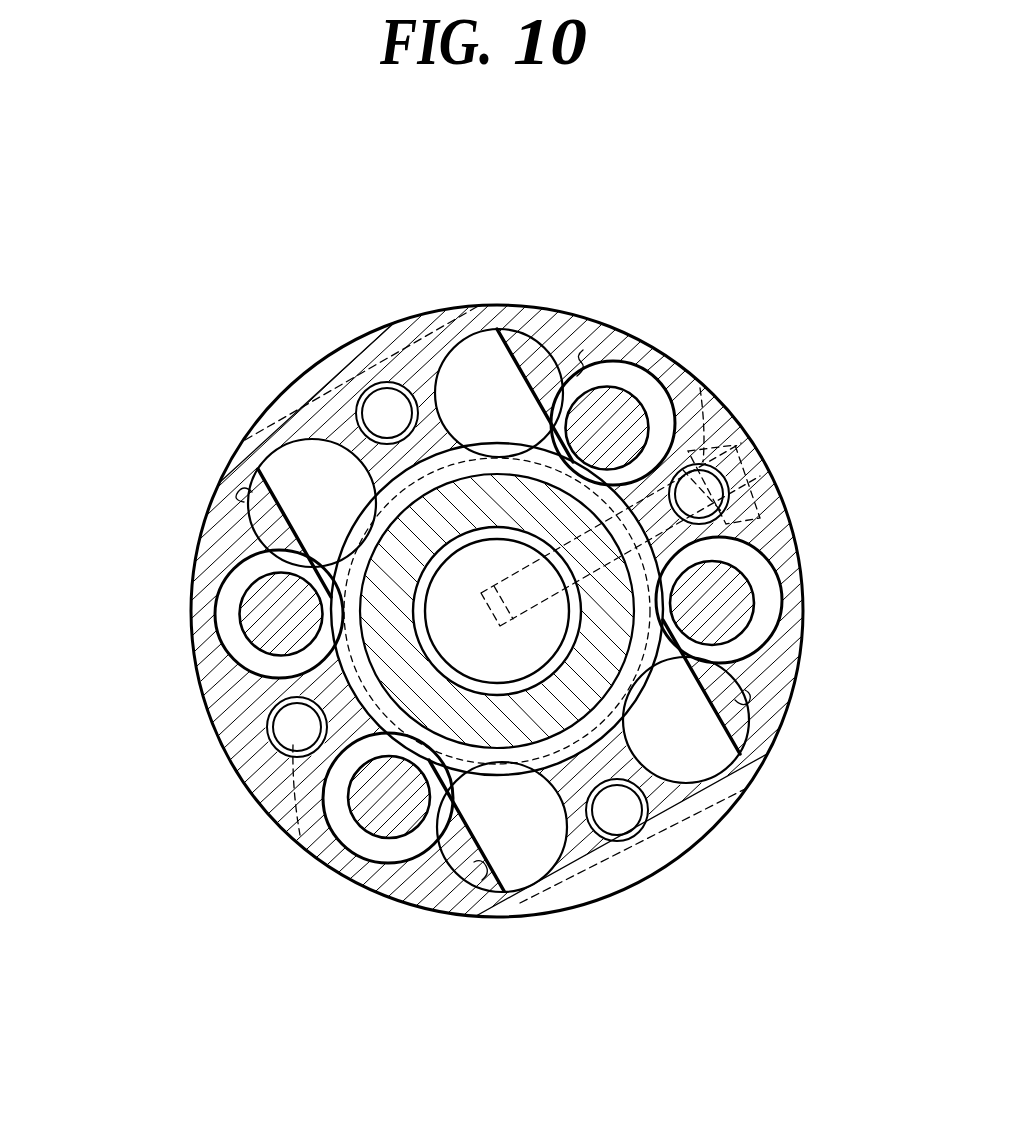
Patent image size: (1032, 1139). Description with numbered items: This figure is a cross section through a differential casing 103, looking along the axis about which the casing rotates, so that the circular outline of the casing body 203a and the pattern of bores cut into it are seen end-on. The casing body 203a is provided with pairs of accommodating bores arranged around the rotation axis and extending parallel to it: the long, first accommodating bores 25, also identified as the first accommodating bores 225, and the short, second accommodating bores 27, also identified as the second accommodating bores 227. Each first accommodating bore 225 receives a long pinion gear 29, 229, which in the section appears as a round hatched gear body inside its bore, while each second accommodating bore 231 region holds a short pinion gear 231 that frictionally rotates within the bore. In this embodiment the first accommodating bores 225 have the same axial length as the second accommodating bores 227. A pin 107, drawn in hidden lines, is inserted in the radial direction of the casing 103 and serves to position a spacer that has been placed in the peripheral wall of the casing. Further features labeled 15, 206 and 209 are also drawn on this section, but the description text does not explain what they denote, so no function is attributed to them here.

The flange body 15 is at (588, 865).
The long accommodating bore 25 is at (633, 417).
The short accommodating bore 27 is at (540, 330).
The long pinion gear 29 is at (802, 560).
The differential casing 103 is at (687, 304).
The pin 107 is at (758, 466).
The casing body 203a is at (667, 840).
The pin hole 206 is at (389, 401).
The plate edge 209 is at (337, 352).
The first accommodating bore 225 is at (245, 568).
The second accommodating bore 227 is at (253, 507).
The long pinion gear 229 is at (680, 392).
The short pinion gear 231 is at (577, 362).